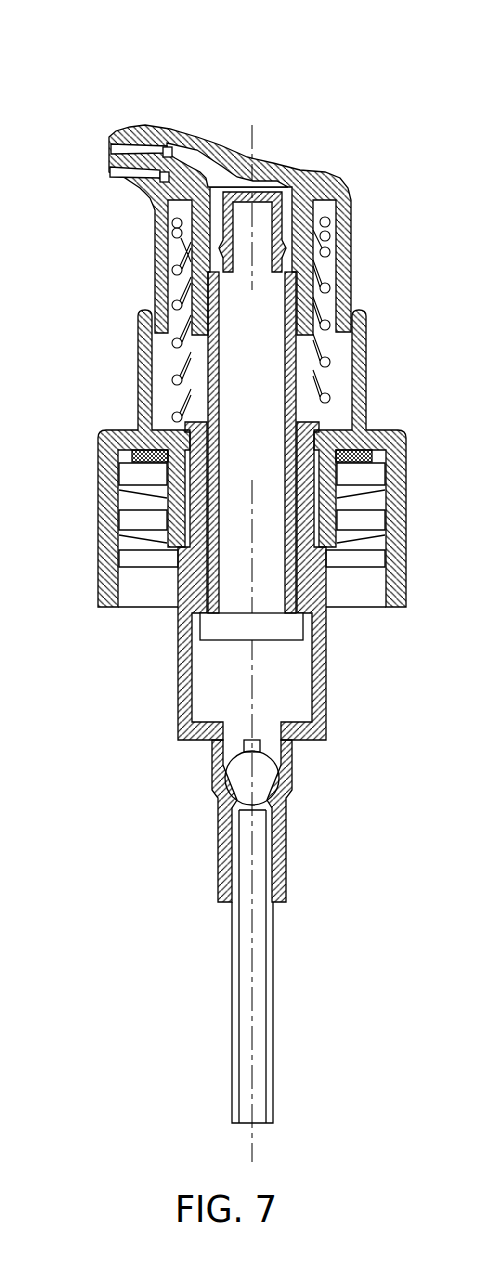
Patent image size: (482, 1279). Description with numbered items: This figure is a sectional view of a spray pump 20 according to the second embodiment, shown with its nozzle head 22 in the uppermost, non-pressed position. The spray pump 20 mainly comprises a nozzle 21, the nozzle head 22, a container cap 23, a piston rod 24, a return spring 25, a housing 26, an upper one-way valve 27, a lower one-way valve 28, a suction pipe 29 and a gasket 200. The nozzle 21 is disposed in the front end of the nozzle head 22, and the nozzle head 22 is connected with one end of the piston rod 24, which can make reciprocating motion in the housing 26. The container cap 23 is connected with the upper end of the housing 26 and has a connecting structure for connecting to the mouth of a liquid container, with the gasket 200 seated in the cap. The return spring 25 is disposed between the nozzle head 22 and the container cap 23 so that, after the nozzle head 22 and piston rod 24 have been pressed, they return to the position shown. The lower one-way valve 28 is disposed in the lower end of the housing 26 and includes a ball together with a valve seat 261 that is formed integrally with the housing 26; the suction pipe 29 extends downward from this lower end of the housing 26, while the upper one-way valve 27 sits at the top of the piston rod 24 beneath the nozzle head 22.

The spray pump 20 is at (253, 586).
The nozzle 21 is at (112, 160).
The nozzle head 22 is at (294, 177).
The container cap 23 is at (400, 437).
The piston rod 24 is at (290, 382).
The return spring 25 is at (308, 360).
The housing 26 is at (325, 687).
The valve seat 261 is at (217, 793).
The upper one-way valve 27 is at (280, 225).
The lower one-way valve 28 is at (267, 783).
The suction pipe 29 is at (255, 1007).
The gasket 200 is at (355, 463).